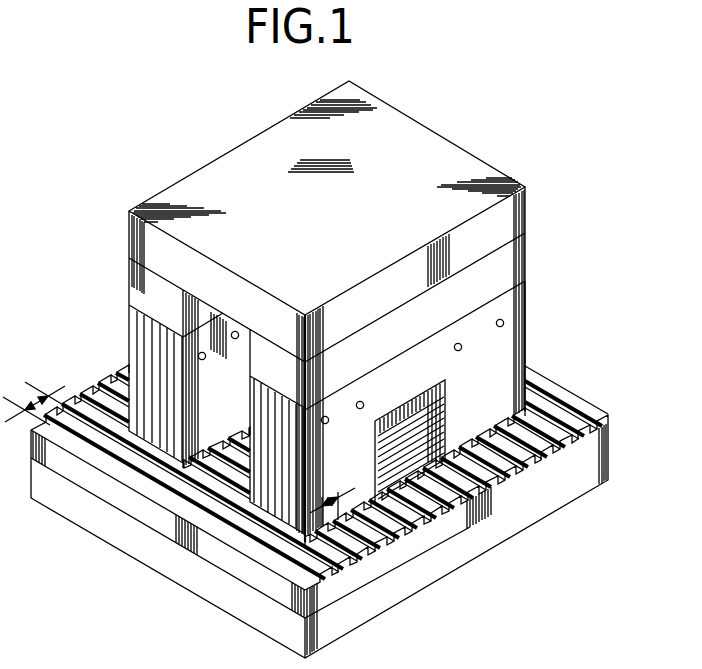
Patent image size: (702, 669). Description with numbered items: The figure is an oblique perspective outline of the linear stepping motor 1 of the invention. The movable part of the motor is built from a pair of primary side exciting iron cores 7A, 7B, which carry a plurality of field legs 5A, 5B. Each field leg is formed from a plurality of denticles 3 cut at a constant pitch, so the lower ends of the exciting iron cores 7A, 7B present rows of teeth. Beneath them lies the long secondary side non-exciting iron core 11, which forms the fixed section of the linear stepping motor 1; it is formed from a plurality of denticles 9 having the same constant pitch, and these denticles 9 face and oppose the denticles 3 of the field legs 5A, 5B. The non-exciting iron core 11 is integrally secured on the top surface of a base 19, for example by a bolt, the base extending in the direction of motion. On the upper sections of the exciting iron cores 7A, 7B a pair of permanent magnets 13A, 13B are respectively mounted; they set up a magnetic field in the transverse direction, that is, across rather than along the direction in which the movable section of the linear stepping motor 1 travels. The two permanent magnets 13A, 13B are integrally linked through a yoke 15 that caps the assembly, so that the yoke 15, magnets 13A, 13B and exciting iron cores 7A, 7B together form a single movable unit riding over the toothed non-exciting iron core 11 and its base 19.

The linear stepping motor 1 is at (463, 139).
The denticles 3 is at (376, 504).
The field leg 5A is at (357, 451).
The field leg 5B is at (495, 381).
The primary side exciting iron core 7A is at (527, 332).
The primary side exciting iron core 7B is at (126, 333).
The denticles 9 is at (442, 518).
The secondary side non-exciting iron core 11 is at (473, 521).
The permanent magnet 13A is at (512, 272).
The permanent magnet 13B is at (138, 292).
The yoke 15 is at (512, 222).
The base 19 is at (533, 514).